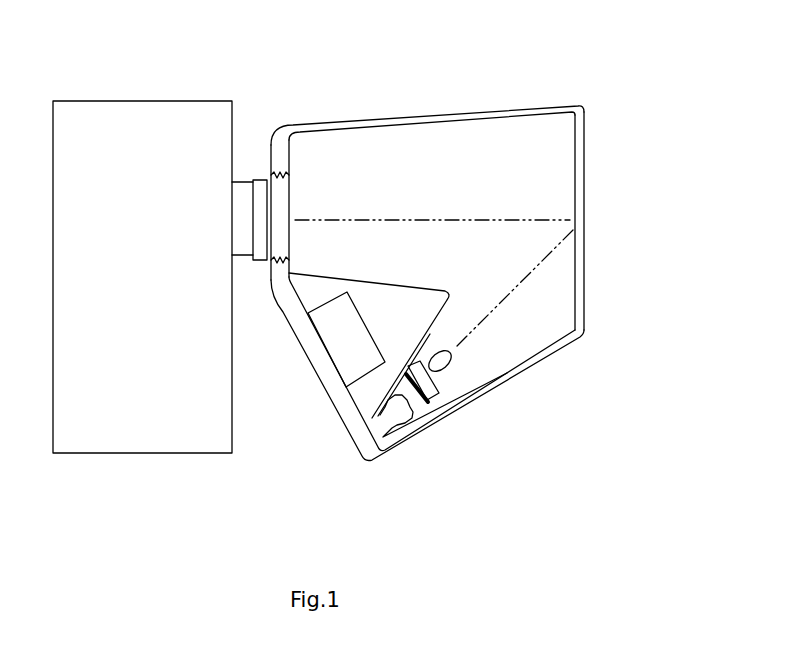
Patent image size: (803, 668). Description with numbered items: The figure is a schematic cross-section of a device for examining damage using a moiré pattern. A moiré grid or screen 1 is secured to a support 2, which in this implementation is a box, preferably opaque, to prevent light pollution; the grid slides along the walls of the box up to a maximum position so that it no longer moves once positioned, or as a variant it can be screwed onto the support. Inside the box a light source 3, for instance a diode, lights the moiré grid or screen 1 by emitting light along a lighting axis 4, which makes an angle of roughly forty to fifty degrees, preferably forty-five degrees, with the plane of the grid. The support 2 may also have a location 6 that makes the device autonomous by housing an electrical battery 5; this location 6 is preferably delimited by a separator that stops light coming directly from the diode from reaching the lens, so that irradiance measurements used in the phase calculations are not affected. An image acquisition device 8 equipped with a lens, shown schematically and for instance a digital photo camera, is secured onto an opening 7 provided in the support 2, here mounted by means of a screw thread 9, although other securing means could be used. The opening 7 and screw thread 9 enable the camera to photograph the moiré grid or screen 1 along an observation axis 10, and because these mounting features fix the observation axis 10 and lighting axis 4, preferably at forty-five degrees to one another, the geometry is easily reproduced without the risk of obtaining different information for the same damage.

The moiré grid or screen 1 is at (580, 293).
The support 2 is at (553, 108).
The light source 3 is at (450, 367).
The lighting axis 4 is at (560, 245).
The electrical battery 5 is at (362, 365).
The location 6 is at (390, 322).
The opening 7 is at (281, 203).
The image acquisition device 8 is at (105, 150).
The screw thread 9 is at (273, 175).
The observation axis 10 is at (540, 219).